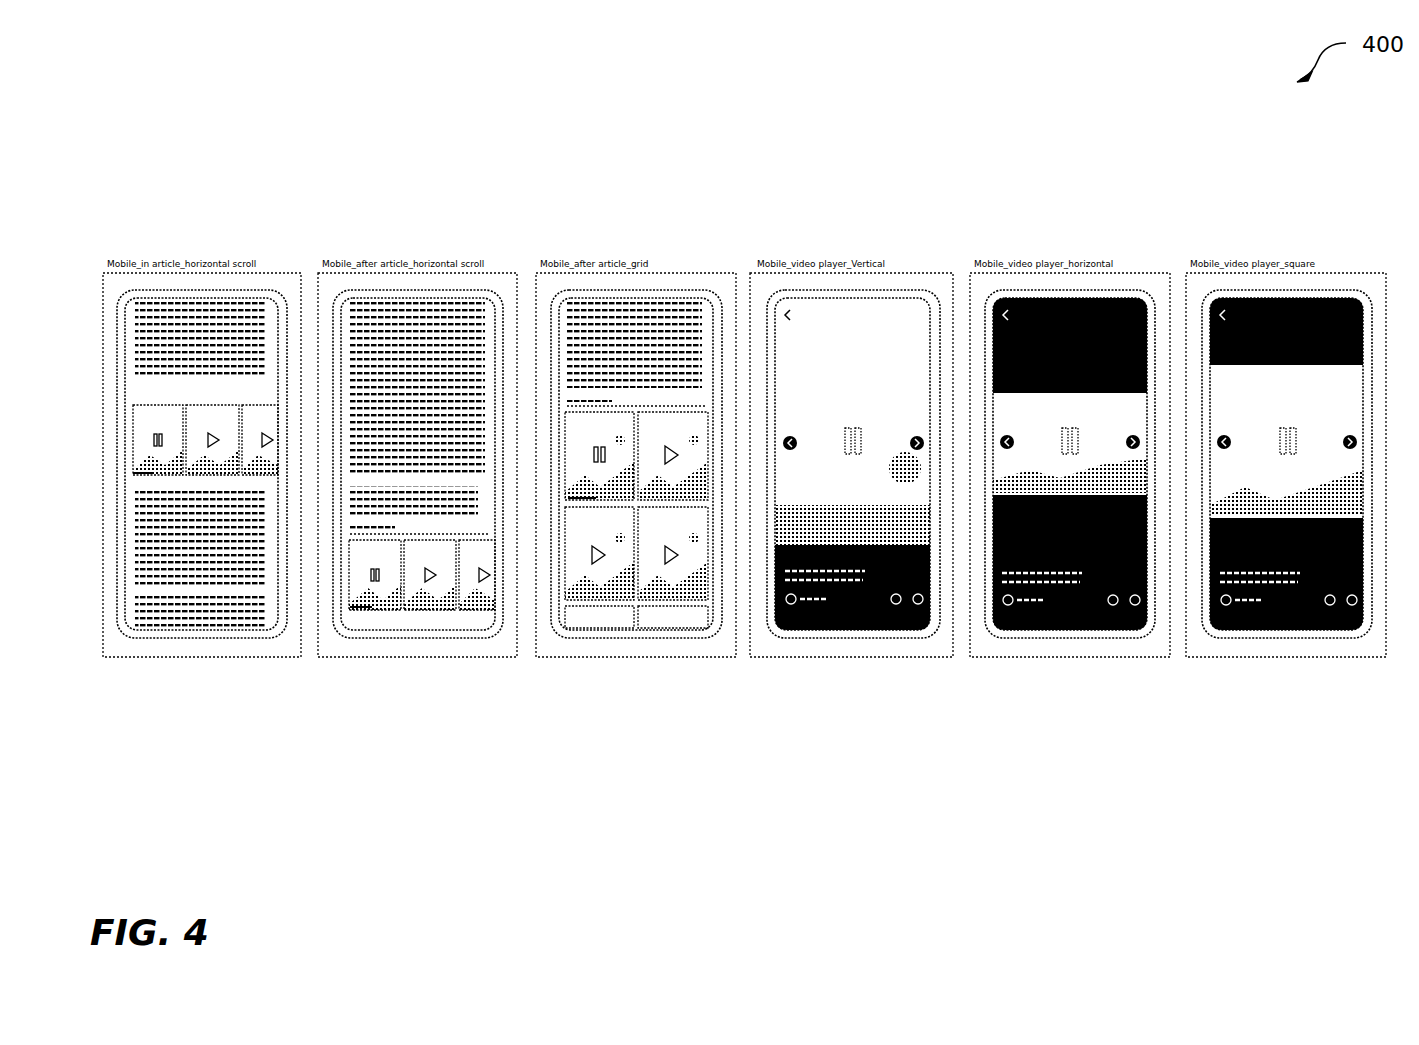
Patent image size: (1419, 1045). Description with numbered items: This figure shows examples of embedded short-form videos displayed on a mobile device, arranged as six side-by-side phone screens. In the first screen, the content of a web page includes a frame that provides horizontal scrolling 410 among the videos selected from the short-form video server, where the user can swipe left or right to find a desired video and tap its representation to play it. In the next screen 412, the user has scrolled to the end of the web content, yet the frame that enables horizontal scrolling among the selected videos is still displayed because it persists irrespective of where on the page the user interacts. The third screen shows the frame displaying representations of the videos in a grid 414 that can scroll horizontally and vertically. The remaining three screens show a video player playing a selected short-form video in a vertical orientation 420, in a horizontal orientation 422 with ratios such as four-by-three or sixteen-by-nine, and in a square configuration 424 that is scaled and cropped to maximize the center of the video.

The horizontal scrolling 410 is at (182, 290).
The scrolled to end of web content 412 is at (400, 290).
The grid 414 is at (620, 290).
The vertical orientation 420 is at (852, 290).
The horizontal orientation 422 is at (1060, 290).
The square configuration 424 is at (1280, 290).